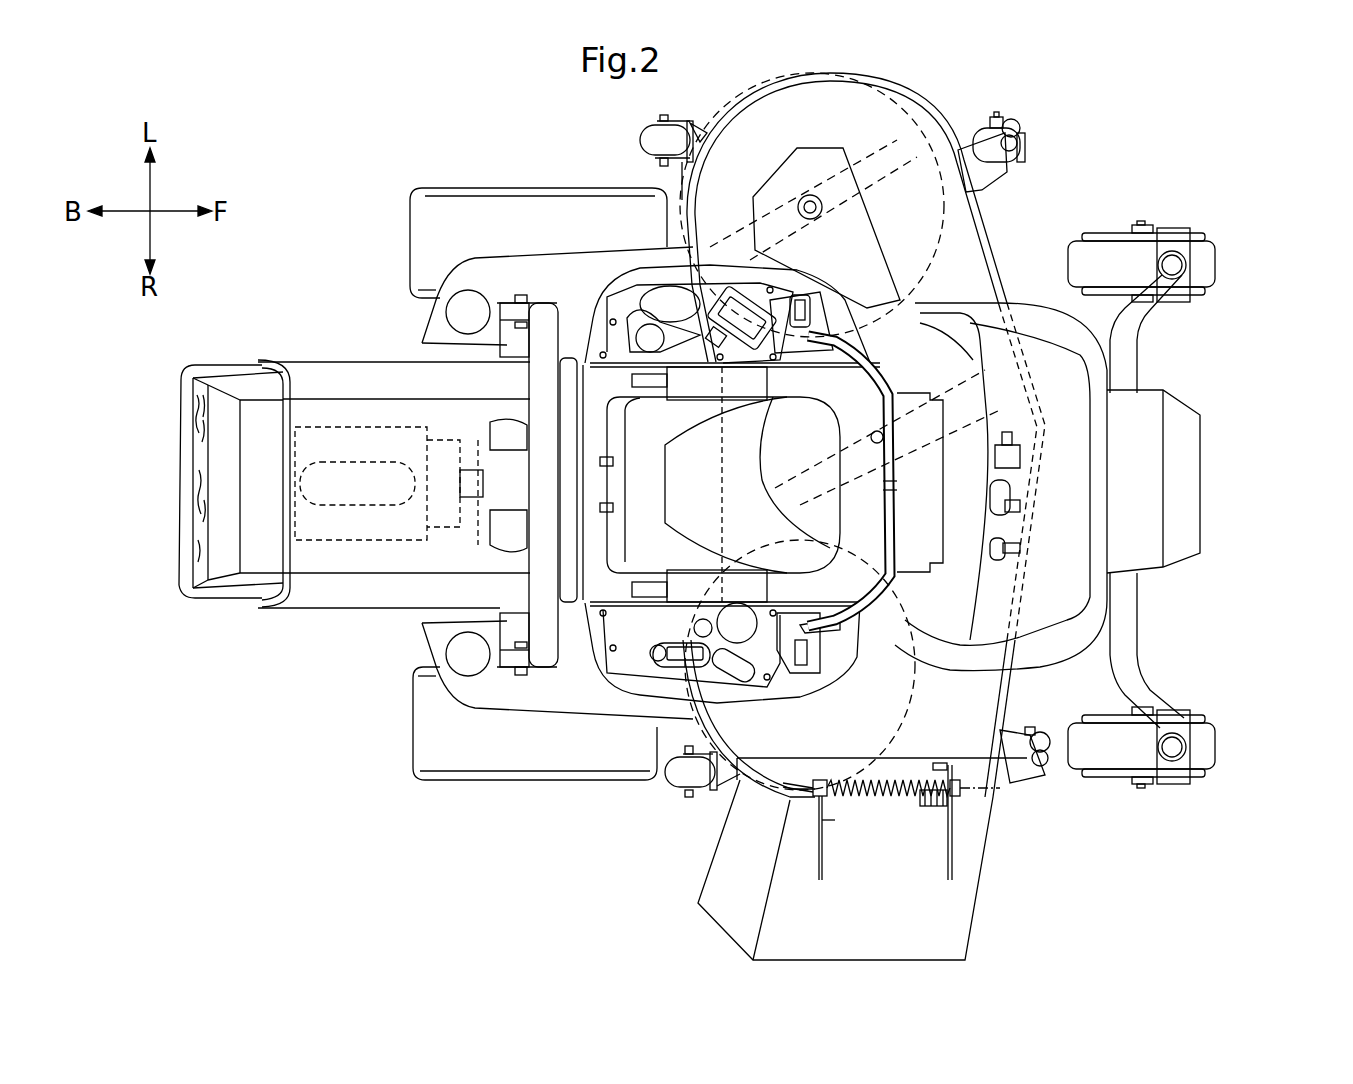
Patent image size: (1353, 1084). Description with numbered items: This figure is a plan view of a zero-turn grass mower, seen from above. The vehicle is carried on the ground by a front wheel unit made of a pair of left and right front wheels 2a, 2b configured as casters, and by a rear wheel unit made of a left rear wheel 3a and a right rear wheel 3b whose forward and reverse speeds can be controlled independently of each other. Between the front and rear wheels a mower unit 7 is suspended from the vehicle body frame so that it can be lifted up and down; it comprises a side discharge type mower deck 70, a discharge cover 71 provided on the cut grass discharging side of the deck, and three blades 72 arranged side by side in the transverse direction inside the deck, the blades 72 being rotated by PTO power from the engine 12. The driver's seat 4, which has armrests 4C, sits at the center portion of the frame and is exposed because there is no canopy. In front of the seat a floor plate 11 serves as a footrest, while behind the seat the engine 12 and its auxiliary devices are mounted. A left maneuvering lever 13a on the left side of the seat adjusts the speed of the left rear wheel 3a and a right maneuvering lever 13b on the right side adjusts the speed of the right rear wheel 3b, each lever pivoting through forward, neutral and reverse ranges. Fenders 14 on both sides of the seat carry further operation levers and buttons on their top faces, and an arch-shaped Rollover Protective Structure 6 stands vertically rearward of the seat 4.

The left front wheel 2a is at (1220, 263).
The right front wheel 2b is at (1220, 742).
The left rear wheel 3a is at (498, 210).
The right rear wheel 3b is at (500, 760).
The driver's seat 4 is at (823, 540).
The armrests 4C is at (698, 385).
The Rollover Protective Structure (ROPS) 6 is at (540, 660).
The mower unit 7 is at (859, 516).
The mower deck 70 is at (988, 285).
The discharge cover 71 is at (970, 890).
The blades 72 is at (878, 260).
The floor plate 11 is at (943, 603).
The engine 12 is at (345, 430).
The left maneuvering lever 13a is at (800, 455).
The right maneuvering lever 13b is at (790, 500).
The fenders 14 is at (583, 298).